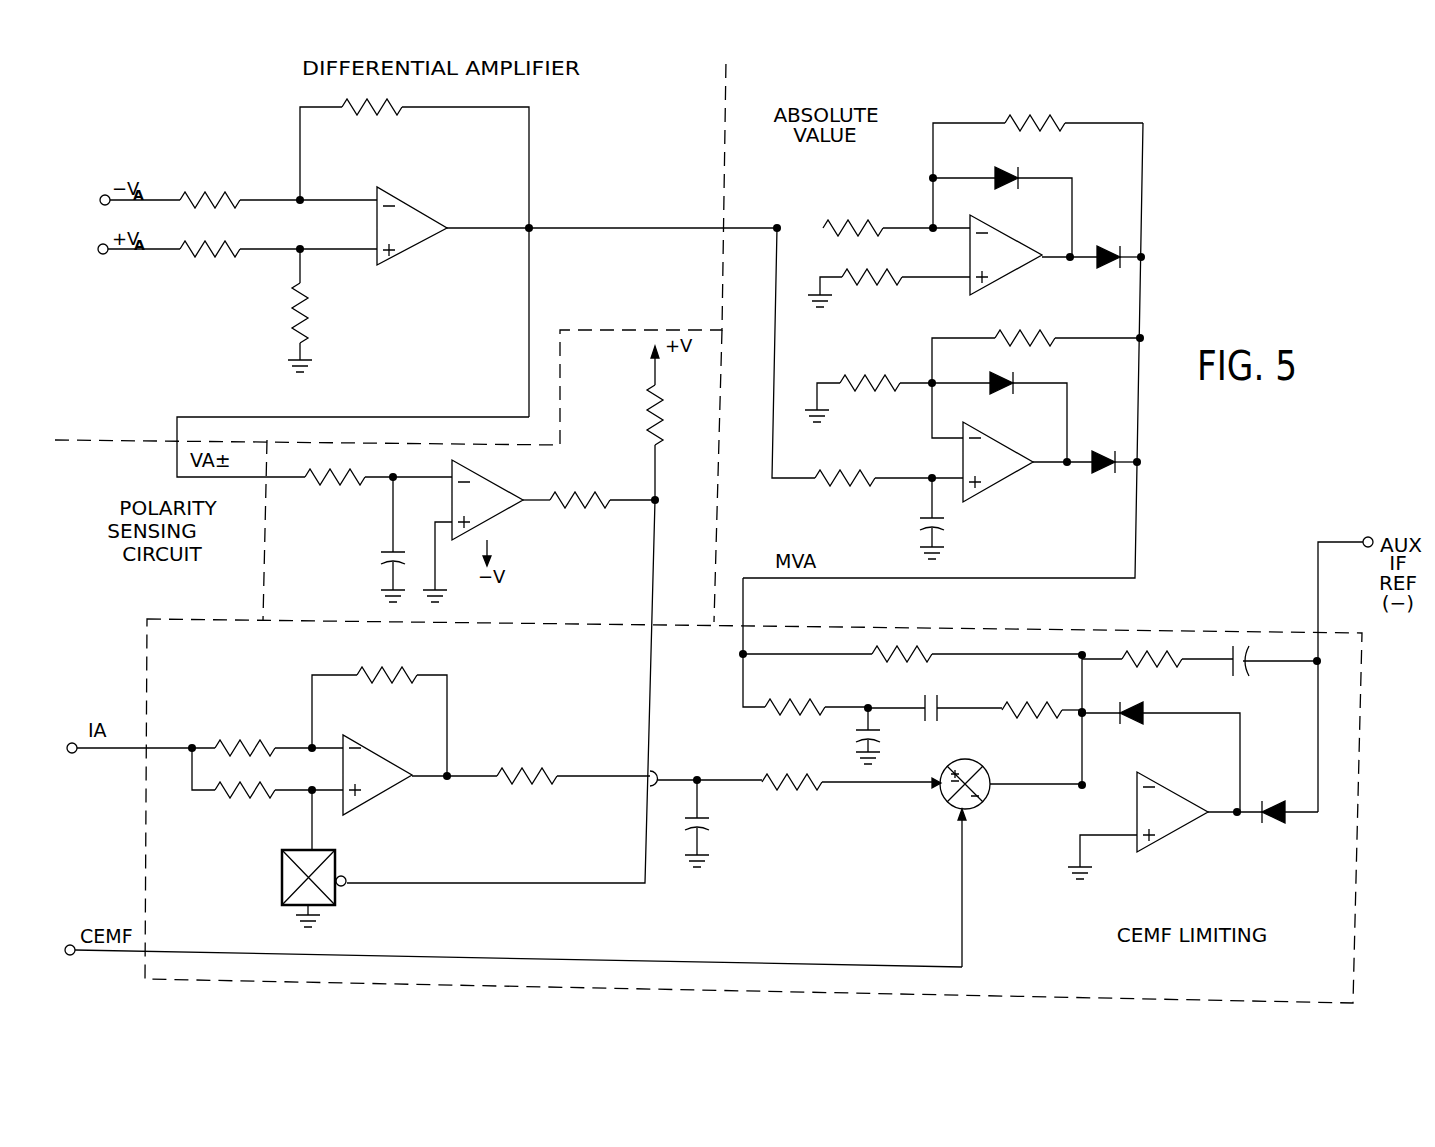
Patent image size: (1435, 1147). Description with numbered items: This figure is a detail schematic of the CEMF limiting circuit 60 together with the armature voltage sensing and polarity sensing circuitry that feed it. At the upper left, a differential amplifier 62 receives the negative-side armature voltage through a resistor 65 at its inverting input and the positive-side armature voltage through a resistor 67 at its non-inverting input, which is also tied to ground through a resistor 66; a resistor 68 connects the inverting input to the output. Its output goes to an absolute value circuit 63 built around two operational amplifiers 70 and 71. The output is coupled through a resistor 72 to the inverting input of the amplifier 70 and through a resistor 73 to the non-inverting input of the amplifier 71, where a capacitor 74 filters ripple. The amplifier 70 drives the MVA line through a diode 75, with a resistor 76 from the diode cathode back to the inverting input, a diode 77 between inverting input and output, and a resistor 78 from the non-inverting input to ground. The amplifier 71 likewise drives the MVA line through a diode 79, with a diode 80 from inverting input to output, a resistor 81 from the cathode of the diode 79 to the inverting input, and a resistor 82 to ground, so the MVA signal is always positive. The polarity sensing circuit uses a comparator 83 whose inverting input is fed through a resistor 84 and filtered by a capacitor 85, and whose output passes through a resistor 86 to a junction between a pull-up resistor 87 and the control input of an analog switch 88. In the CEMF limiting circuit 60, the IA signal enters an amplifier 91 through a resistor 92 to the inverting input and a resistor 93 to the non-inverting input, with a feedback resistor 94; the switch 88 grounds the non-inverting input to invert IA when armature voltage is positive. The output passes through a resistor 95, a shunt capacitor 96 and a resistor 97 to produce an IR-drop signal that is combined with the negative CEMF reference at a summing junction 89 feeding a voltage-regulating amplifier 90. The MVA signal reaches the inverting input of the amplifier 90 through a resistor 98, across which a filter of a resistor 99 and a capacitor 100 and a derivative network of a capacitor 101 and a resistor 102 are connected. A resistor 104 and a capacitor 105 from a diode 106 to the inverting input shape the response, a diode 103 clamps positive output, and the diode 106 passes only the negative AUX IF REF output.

The CEMF limiting circuit 60 is at (719, 754).
The differential amplifier 62 is at (405, 252).
The absolute value circuit 63 is at (944, 328).
The resistor 65 is at (222, 192).
The resistor 66 is at (312, 312).
The resistor 67 is at (208, 262).
The resistor 68 is at (375, 114).
The operational amplifier 70 is at (1008, 232).
The operational amplifier 71 is at (1010, 480).
The resistor 72 is at (862, 219).
The resistor 73 is at (842, 468).
The capacitor 74 is at (923, 520).
The diode 75 is at (1108, 245).
The resistor 76 is at (1025, 118).
The diode 77 is at (998, 170).
The resistor 78 is at (873, 286).
The diode 79 is at (1103, 476).
The diode 80 is at (1003, 392).
The resistor 81 is at (1021, 330).
The resistor 82 is at (862, 372).
The comparator 83 is at (497, 484).
The resistor 84 is at (342, 492).
The capacitor 85 is at (384, 553).
The resistor 86 is at (594, 518).
The pull-up resistor 87 is at (648, 395).
The analog switch 88 is at (339, 858).
The summing junction 89 is at (982, 805).
The voltage-regulating amplifier 90 is at (1175, 834).
The amplifier 91 is at (376, 751).
The resistor 92 is at (245, 735).
The resistor 93 is at (240, 803).
The resistor 94 is at (385, 668).
The resistor 95 is at (521, 768).
The capacitor 96 is at (710, 818).
The resistor 97 is at (780, 775).
The resistor 98 is at (890, 658).
The resistor 99 is at (790, 700).
The capacitor 100 is at (878, 728).
The capacitor 101 is at (935, 700).
The resistor 102 is at (1044, 705).
The diode 103 is at (1140, 722).
The resistor 104 is at (1135, 665).
The capacitor 105 is at (1237, 678).
The diode 106 is at (1275, 825).